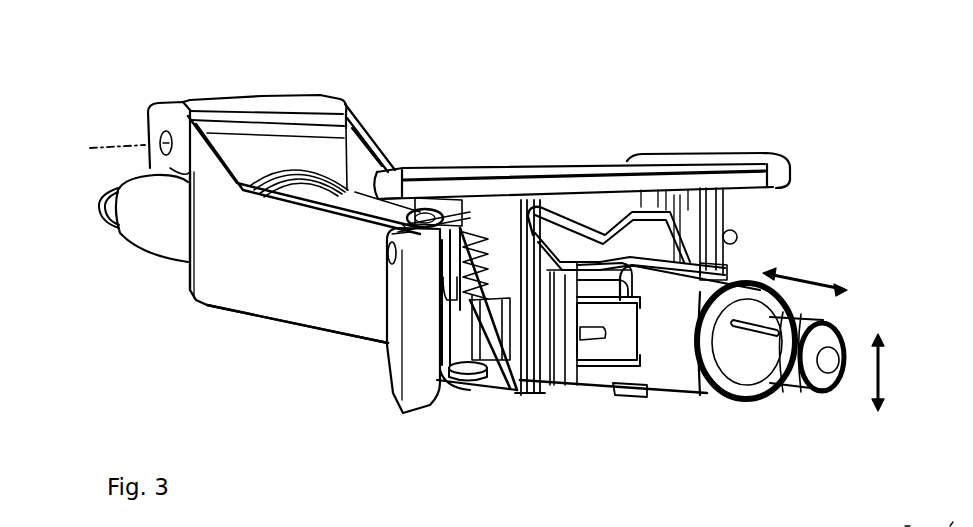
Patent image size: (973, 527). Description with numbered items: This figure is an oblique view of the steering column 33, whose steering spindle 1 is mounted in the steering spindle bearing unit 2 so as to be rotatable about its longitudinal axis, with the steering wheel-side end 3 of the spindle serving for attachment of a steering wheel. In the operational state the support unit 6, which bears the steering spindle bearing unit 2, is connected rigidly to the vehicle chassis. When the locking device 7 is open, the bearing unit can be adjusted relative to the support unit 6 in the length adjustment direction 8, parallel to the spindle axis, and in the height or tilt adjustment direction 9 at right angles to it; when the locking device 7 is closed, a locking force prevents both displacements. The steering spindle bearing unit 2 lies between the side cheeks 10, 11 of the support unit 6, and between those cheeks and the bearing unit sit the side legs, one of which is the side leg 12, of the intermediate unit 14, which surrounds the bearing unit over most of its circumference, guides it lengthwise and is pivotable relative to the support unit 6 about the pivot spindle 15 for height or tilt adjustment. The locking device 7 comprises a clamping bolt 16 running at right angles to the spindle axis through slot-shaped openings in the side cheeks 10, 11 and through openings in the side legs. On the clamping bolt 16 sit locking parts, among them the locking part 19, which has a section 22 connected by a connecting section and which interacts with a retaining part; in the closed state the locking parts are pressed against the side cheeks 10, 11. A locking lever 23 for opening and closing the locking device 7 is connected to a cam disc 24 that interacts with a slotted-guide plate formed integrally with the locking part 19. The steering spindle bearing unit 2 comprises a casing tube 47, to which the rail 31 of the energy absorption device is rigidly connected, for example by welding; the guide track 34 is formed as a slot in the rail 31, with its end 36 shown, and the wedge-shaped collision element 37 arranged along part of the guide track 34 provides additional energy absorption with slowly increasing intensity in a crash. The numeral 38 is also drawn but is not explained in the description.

The steering spindle 1 is at (760, 365).
The steering spindle bearing unit 2 is at (708, 396).
The steering wheel-side end 3 is at (825, 386).
The support unit 6 is at (731, 148).
The locking device 7 is at (382, 295).
The length adjustment direction 8 is at (802, 273).
The height or tilt adjustment direction 9 is at (880, 363).
The side cheek 10 is at (490, 350).
The side cheek 11 is at (715, 206).
The side leg 12 is at (543, 355).
The intermediate unit 14 is at (357, 341).
The pivot spindle 15 is at (385, 124).
The clamping bolt 16 is at (602, 240).
The locking part 19 is at (484, 330).
The section 22 is at (503, 330).
The locking lever 23 is at (418, 368).
The cam disc 24 is at (470, 323).
The rail 31 is at (625, 365).
The steering column 33 is at (459, 151).
The guide track 34 is at (598, 345).
The end 36 is at (603, 350).
The collision element 37 is at (624, 330).
The element 38 is at (907, 517).
The casing tube 47 is at (957, 515).